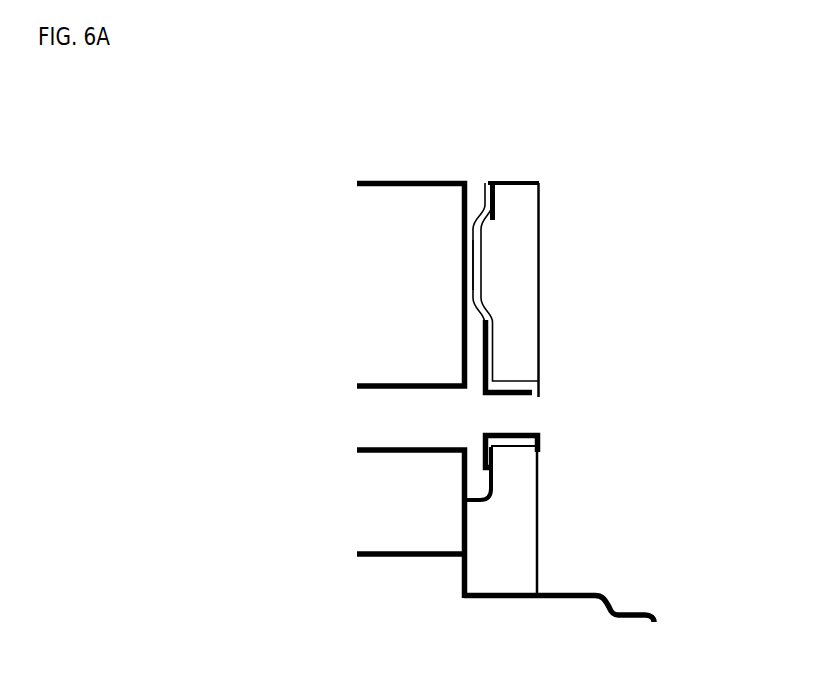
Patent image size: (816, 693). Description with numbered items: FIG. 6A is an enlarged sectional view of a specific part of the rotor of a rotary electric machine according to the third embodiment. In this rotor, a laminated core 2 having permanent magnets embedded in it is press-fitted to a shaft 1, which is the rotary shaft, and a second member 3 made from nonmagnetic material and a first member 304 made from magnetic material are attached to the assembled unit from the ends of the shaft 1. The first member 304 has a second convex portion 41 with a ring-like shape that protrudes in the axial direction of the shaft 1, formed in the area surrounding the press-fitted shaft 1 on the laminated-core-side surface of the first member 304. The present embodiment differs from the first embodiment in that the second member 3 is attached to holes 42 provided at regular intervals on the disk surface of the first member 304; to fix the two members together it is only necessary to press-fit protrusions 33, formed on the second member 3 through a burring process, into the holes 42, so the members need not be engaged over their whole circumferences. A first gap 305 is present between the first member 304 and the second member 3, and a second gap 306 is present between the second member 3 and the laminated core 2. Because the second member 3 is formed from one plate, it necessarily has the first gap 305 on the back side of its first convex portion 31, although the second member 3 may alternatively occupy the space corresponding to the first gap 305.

The shaft 1 is at (570, 612).
The laminated core 2 is at (368, 219).
The second member 3 is at (485, 210).
The first convex portion 31 is at (472, 292).
The protrusions 33 is at (533, 392).
The second convex portion 41 is at (476, 542).
The holes 42 is at (538, 445).
The first member 304 is at (522, 290).
The first gap 305 is at (488, 265).
The second gap 306 is at (473, 195).